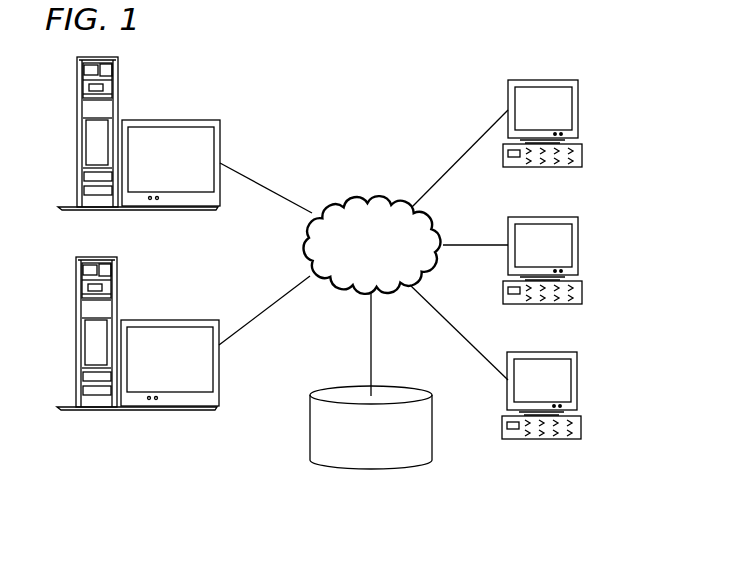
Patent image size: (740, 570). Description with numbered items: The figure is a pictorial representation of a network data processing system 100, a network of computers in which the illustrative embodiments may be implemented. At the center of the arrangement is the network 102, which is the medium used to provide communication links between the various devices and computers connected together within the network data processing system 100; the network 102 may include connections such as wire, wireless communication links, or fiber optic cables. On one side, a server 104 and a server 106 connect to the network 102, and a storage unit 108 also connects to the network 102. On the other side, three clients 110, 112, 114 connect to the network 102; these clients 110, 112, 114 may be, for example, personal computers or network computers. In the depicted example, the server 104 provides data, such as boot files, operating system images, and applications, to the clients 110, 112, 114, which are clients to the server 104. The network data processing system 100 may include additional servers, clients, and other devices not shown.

The network data processing system 100 is at (425, 88).
The network 102 is at (346, 200).
The server 104 is at (77, 135).
The server 106 is at (76, 336).
The storage unit 108 is at (352, 468).
The client 110 is at (578, 112).
The client 112 is at (577, 248).
The client 114 is at (577, 381).